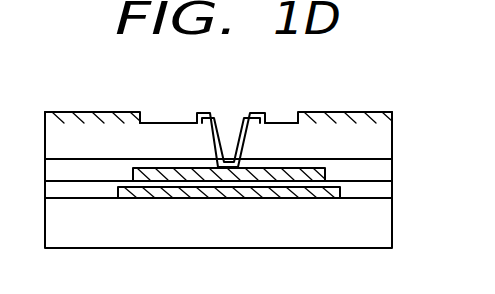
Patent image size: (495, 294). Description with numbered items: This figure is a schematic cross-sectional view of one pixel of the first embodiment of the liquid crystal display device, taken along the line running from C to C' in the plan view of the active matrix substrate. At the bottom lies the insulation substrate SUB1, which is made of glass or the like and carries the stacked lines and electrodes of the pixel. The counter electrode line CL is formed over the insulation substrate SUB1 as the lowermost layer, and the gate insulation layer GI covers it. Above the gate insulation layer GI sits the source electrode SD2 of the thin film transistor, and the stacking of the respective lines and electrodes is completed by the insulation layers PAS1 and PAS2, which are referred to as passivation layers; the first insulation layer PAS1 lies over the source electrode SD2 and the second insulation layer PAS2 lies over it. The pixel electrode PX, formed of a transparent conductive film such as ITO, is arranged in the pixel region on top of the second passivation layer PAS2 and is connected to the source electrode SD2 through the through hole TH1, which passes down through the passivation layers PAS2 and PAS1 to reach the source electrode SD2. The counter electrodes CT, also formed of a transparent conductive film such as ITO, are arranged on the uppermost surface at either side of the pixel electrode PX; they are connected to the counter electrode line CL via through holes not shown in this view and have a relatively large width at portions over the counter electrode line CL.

The insulation substrate SUB1 is at (385, 228).
The gate insulation layer GI is at (385, 193).
The insulation layer (first passivation layer) PAS1 is at (387, 173).
The insulation layer (second passivation layer) PAS2 is at (387, 141).
The counter electrode line CL is at (318, 194).
The source electrode SD2 is at (172, 172).
The counter electrode CT is at (85, 115).
The pixel electrode PX is at (257, 116).
The through hole TH1 is at (230, 137).
The section line endpoint C is at (22, 194).
The section line endpoint C' is at (477, 198).